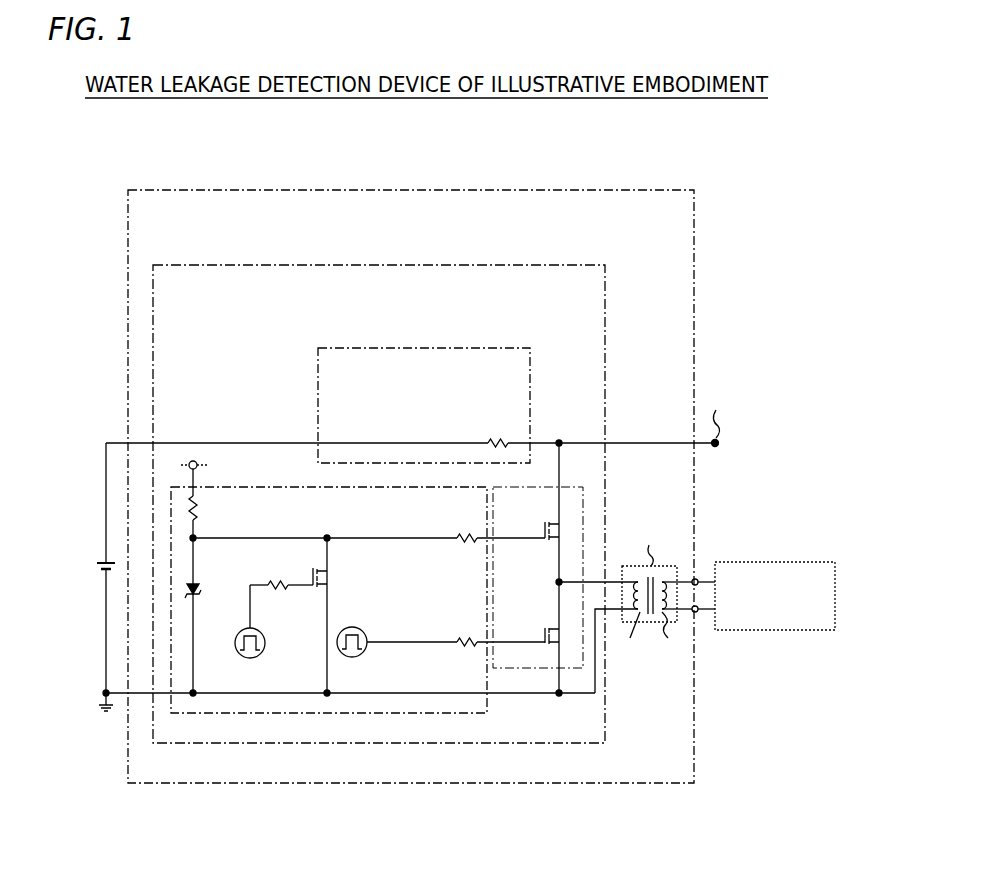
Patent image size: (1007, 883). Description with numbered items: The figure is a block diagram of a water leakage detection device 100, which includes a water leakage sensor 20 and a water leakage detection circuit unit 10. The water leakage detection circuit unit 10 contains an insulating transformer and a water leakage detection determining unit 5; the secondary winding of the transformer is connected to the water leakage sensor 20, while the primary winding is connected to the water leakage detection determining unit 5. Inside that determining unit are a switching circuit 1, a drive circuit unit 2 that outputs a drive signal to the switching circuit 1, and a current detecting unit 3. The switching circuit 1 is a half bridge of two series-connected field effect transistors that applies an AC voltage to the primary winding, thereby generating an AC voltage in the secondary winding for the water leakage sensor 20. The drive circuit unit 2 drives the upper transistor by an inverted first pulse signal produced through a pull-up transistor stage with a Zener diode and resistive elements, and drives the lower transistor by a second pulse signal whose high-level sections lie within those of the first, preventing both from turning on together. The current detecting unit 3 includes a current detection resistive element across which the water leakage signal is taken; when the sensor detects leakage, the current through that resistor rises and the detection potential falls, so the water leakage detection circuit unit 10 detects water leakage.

The water leakage detection device 100 is at (188, 165).
The water leakage detection circuit unit 10 is at (513, 190).
The water leakage detection determining unit 5 is at (553, 265).
The current detecting unit 3 is at (510, 348).
The drive circuit unit 2 is at (257, 486).
The switching circuit 1 is at (568, 487).
The water leakage sensor 20 is at (735, 561).